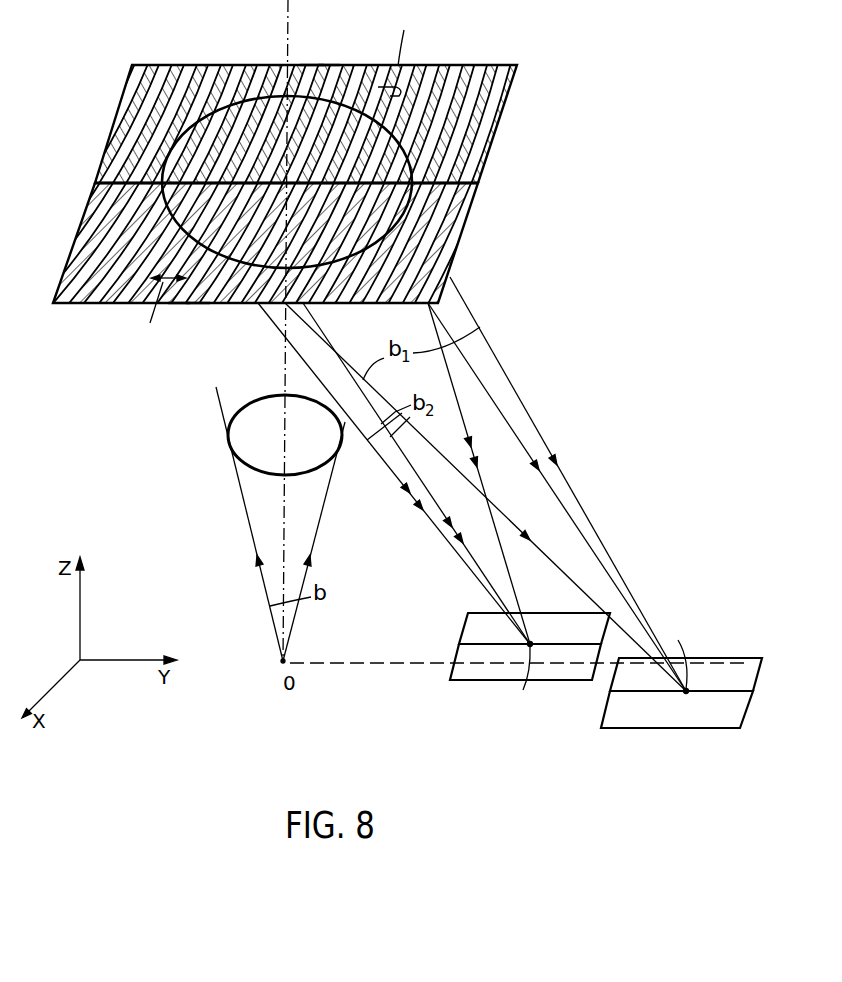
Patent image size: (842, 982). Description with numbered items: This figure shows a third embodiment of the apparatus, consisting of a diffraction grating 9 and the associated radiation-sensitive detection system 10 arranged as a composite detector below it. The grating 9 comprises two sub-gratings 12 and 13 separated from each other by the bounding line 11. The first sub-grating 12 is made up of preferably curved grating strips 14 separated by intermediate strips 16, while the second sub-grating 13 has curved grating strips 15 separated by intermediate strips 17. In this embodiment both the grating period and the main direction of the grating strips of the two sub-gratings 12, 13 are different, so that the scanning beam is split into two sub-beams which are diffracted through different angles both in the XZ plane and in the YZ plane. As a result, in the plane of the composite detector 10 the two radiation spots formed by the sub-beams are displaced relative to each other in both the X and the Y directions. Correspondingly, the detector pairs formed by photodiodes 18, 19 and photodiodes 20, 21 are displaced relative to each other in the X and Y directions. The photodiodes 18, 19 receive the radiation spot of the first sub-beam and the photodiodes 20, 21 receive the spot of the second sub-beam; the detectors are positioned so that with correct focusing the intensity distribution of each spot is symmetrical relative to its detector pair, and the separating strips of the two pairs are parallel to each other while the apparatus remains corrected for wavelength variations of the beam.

The grating 9 is at (284, 301).
The radiation-sensitive detection system 10 is at (587, 690).
The bounding line 11 is at (100, 182).
The sub-grating 12 is at (117, 112).
The sub-grating 13 is at (75, 240).
The grating strips 14 is at (311, 66).
The grating strips 15 is at (176, 304).
The intermediate strips 16 is at (323, 66).
The intermediate strips 17 is at (194, 300).
The photodiode 18 is at (720, 678).
The photodiode 19 is at (722, 720).
The photodiode 20 is at (475, 620).
The photodiode 21 is at (460, 670).